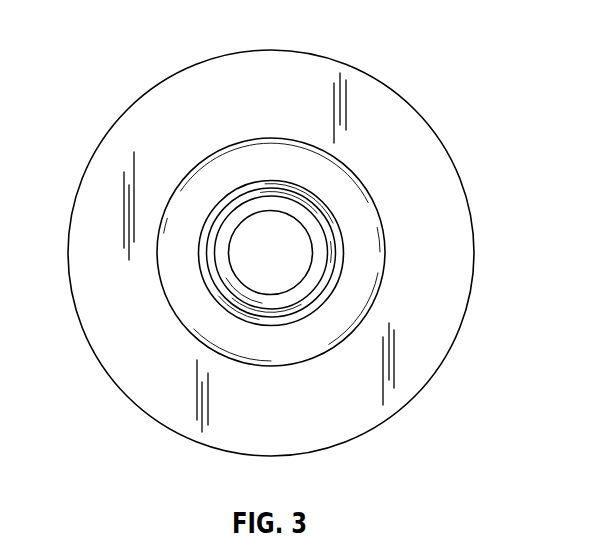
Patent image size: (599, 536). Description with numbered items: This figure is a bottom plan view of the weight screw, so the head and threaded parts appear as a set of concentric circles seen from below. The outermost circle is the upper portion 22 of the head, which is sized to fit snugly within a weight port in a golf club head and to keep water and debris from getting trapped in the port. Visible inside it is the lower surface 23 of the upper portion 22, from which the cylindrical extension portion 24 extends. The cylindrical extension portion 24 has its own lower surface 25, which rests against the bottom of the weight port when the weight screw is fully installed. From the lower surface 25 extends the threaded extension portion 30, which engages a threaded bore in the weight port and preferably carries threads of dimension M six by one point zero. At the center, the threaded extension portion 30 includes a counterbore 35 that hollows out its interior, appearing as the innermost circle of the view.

The upper portion 22 is at (408, 102).
The lower surface 23 is at (450, 202).
The cylindrical extension portion 24 is at (380, 296).
The lower surface 25 is at (343, 305).
The threaded extension portion 30 is at (270, 180).
The counterbore 35 is at (265, 268).